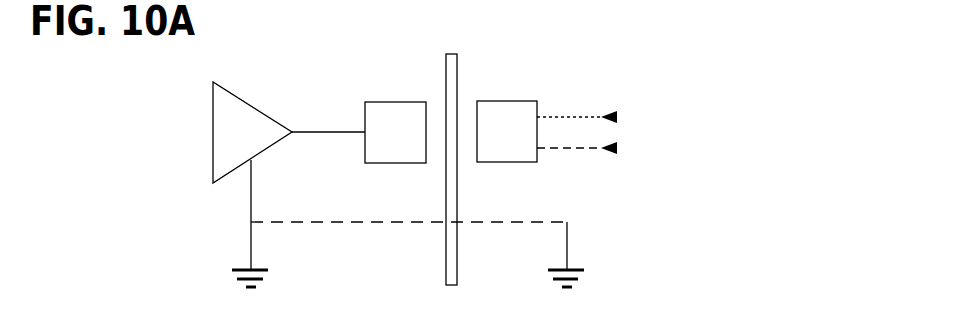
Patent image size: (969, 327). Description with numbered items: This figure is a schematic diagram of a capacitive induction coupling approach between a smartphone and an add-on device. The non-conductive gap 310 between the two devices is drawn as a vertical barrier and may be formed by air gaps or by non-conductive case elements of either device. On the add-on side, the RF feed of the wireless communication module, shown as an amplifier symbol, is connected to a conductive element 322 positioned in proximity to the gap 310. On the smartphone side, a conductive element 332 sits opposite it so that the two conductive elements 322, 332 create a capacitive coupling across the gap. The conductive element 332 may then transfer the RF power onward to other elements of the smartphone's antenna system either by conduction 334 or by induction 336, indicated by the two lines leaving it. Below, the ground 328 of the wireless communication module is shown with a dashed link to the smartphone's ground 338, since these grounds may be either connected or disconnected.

The non-conductive gap 310 is at (462, 50).
The conductive element 322 is at (394, 92).
The ground 328 is at (236, 243).
The conductive element 332 is at (512, 92).
The conduction 334 is at (618, 117).
The induction 336 is at (618, 148).
The smartphone's ground 338 is at (583, 239).